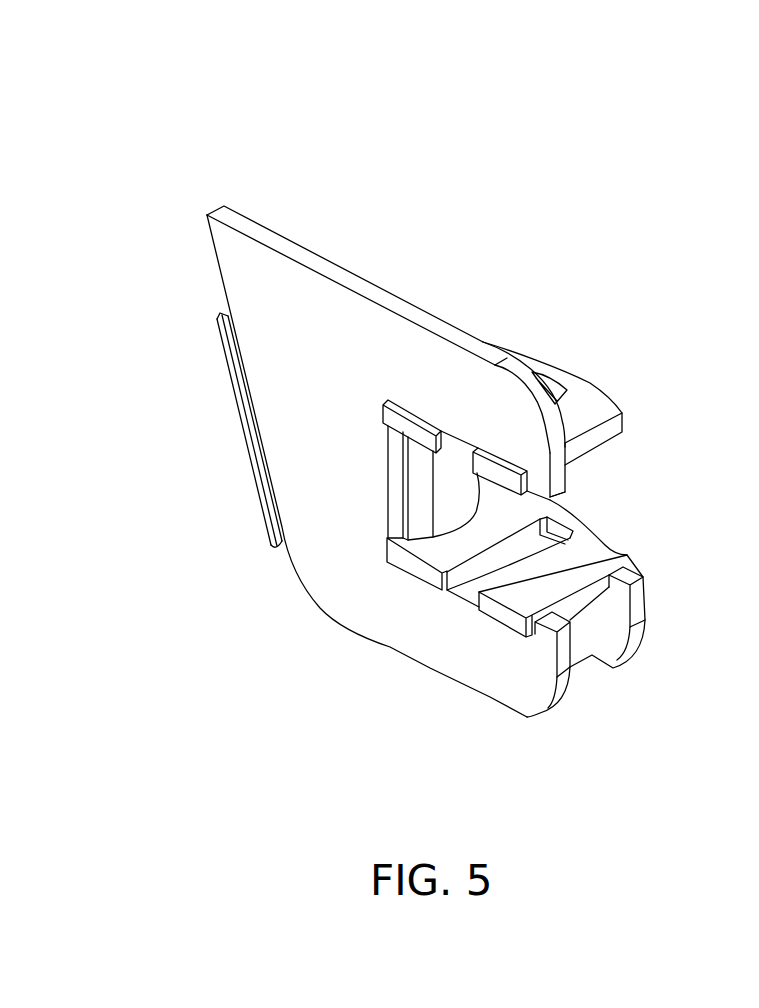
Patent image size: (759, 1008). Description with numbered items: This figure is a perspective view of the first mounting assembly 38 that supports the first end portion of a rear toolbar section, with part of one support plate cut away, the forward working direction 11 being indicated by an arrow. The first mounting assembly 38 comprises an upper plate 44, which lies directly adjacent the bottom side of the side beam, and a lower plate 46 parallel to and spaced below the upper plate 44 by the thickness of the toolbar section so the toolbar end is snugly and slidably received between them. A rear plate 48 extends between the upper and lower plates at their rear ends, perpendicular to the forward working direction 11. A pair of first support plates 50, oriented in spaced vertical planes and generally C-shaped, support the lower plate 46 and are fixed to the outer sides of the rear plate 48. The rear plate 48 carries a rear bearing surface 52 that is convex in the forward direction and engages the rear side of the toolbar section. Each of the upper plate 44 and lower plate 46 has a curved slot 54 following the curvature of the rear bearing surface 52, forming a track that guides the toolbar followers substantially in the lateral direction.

The forward working direction 11 is at (659, 35).
The first mounting assembly 38 is at (424, 118).
The upper plate 44 is at (578, 412).
The lower plate 46 is at (512, 602).
The rear plate 48 is at (395, 506).
The first support plates 50 is at (232, 270).
The rear bearing surface 52 is at (403, 447).
The slot 54 is at (439, 473).